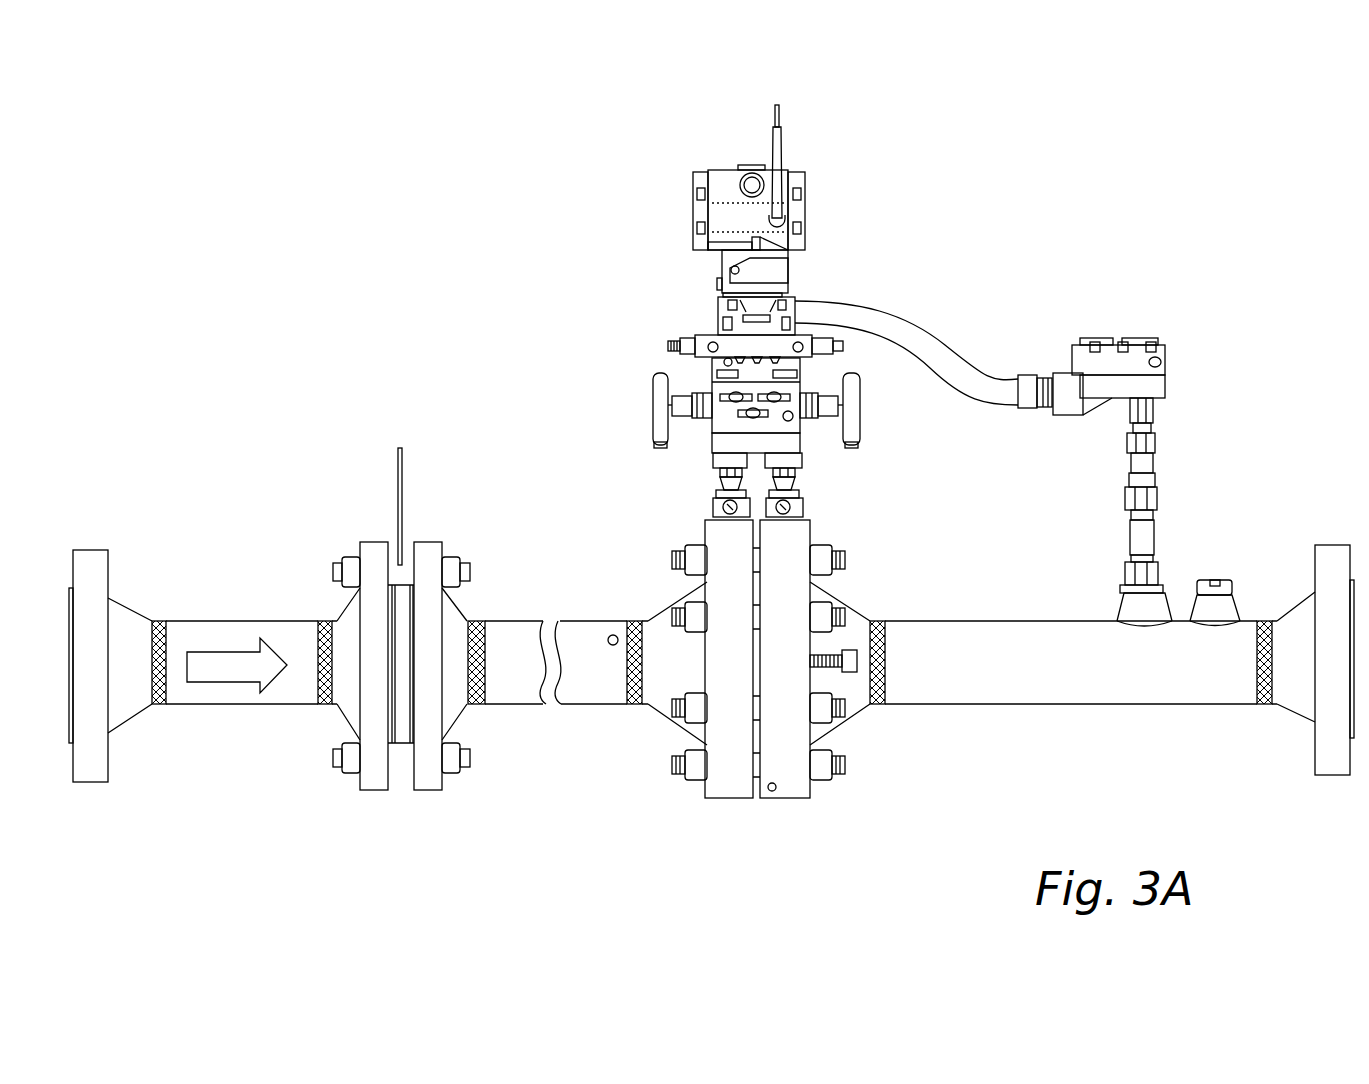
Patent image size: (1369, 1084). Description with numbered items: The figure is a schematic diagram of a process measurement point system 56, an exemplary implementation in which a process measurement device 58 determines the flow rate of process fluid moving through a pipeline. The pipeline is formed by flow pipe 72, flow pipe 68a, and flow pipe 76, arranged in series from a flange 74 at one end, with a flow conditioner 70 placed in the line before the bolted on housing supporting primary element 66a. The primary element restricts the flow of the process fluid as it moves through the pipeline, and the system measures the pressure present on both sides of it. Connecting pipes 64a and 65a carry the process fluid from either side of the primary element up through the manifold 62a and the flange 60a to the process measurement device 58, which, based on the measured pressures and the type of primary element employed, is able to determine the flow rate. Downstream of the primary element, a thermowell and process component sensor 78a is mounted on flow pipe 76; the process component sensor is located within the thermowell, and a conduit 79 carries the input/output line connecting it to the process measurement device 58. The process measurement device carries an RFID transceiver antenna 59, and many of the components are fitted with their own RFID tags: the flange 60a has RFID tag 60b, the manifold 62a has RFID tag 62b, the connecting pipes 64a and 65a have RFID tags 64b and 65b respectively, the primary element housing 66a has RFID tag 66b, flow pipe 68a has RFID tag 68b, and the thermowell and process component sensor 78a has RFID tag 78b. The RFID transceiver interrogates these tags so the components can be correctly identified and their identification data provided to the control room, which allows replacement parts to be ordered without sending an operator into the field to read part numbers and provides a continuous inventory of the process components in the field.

The process measurement point system 56 is at (444, 365).
The process measurement device 58 is at (684, 187).
The RFID transceiver antenna 59 is at (773, 145).
The flange 60a is at (684, 329).
The RFID tag 60b is at (727, 358).
The manifold 62a is at (864, 405).
The RFID tag 62b is at (790, 411).
The connecting pipe 64a is at (808, 499).
The RFID tag 64b is at (796, 488).
The connecting pipe 65a is at (706, 501).
The RFID tag 65b is at (717, 488).
The bolted on housing supporting primary element 66a is at (816, 802).
The RFID tag 66b is at (772, 791).
The flow pipe 68a is at (603, 614).
The RFID tag 68b is at (617, 636).
The flow conditioner 70 is at (432, 532).
The flow pipe 72 is at (243, 615).
The flange 74 is at (95, 550).
The flow pipe 76 is at (1073, 709).
The thermowell and process component sensor 78a is at (1173, 342).
The RFID tag 78b is at (1162, 364).
The conduit 79 is at (930, 340).